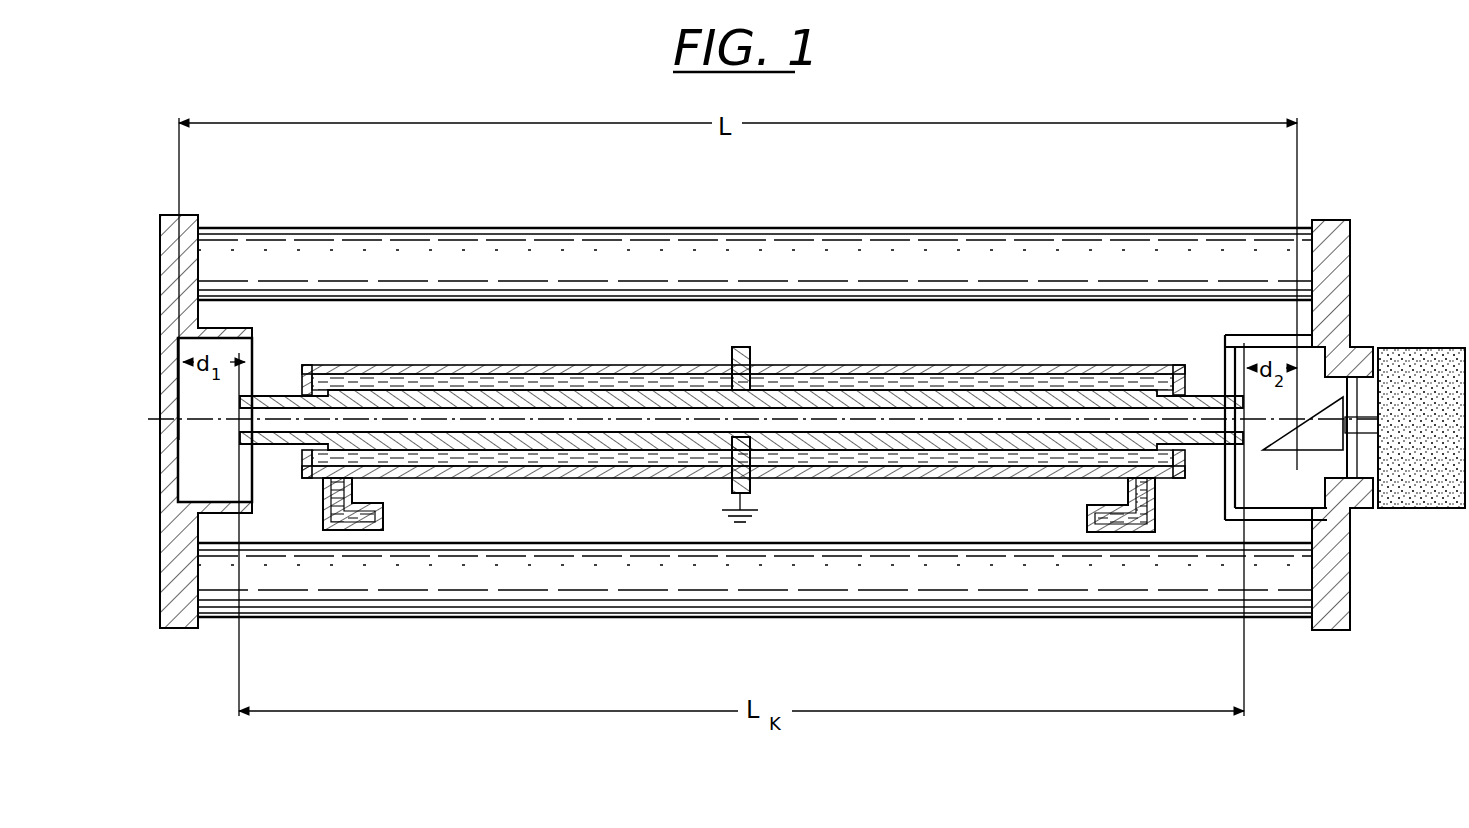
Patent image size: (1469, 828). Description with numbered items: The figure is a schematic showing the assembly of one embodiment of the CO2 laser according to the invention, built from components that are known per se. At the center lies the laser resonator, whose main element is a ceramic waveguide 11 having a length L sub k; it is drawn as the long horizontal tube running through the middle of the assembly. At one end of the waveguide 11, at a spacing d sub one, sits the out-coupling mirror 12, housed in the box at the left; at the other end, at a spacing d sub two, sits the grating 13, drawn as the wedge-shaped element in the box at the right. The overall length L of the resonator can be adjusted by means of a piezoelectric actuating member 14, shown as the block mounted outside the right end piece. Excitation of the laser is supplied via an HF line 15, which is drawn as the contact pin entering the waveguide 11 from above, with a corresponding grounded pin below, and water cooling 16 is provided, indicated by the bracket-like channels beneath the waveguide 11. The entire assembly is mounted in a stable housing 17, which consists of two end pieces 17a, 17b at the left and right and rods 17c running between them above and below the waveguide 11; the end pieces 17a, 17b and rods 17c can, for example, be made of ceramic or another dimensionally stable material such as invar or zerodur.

The ceramic waveguide 11 is at (857, 442).
The out-coupling mirror 12 is at (160, 440).
The grating 13 is at (1297, 440).
The piezoelectric actuating member 14 is at (1405, 495).
The HF line 15 is at (740, 347).
The water cooling 16 is at (383, 513).
The housing 17 is at (770, 427).
The end piece 17a is at (165, 602).
The end piece 17b is at (1345, 607).
The rods 17c is at (998, 250).